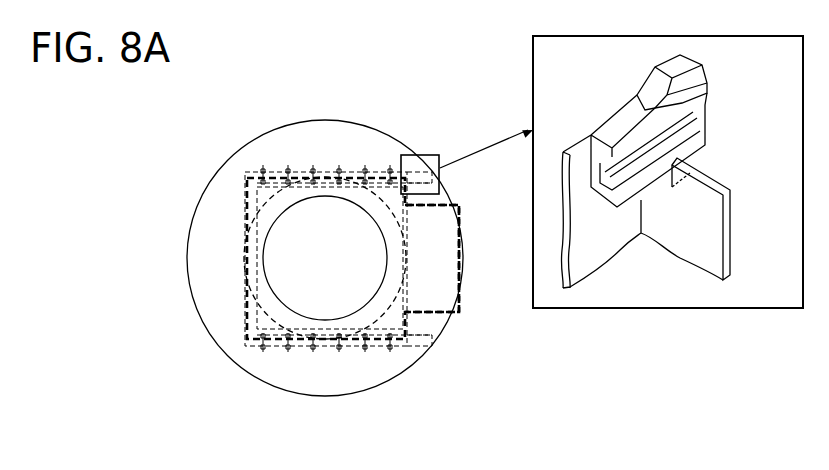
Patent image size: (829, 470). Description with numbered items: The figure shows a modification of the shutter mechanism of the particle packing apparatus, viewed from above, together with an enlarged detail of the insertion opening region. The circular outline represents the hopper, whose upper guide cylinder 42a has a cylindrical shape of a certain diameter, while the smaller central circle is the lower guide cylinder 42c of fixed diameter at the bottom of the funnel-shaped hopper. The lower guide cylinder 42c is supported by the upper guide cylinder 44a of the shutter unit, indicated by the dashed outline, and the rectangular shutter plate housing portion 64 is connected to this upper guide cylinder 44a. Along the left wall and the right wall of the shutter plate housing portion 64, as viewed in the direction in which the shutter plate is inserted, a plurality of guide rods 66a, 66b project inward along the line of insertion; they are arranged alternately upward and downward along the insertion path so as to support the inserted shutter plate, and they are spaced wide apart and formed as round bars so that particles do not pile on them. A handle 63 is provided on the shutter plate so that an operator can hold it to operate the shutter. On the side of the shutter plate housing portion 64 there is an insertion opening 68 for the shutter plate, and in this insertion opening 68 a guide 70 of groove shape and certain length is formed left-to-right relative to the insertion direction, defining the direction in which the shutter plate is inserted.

The upper guide cylinder 42a is at (239, 150).
The lower guide cylinder 42c is at (263, 265).
The upper guide cylinder 44a is at (262, 204).
The handle 63 is at (452, 318).
The shutter plate housing portion 64 is at (258, 228).
The guide rods 66a is at (313, 165).
The guide rods 66b is at (313, 350).
The insertion opening 68 is at (700, 133).
The guide 70 is at (705, 98).